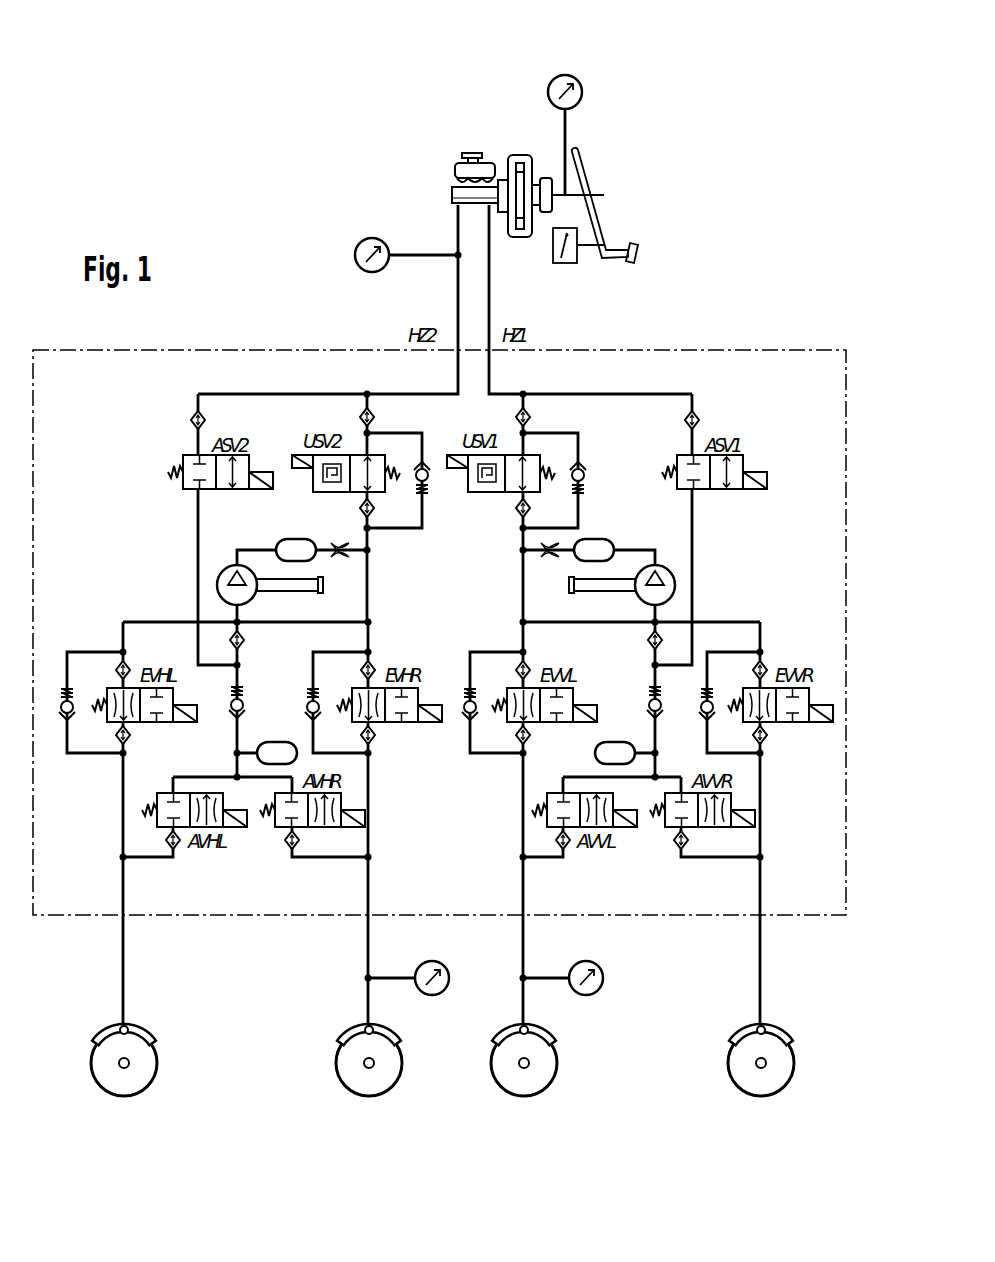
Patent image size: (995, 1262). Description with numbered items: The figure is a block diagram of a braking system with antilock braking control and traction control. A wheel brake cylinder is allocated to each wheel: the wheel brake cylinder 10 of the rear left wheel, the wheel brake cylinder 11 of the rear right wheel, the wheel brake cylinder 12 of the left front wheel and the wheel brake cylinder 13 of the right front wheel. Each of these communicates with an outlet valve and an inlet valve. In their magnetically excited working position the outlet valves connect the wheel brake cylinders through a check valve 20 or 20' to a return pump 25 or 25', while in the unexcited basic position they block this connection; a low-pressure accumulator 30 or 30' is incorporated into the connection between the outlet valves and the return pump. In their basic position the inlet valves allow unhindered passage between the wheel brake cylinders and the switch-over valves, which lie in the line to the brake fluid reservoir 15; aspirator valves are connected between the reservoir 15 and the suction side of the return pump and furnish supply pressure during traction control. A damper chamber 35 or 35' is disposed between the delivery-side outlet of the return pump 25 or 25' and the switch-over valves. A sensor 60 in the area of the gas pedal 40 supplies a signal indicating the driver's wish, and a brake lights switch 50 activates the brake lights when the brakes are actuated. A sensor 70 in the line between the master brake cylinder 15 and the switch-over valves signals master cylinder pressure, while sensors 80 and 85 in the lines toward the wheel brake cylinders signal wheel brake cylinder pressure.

The wheel brake cylinder 10 is at (157, 1063).
The wheel brake cylinder 11 is at (336, 1063).
The wheel brake cylinder 12 is at (491, 1063).
The wheel brake cylinder 13 is at (728, 1063).
The brake fluid reservoir 15 is at (455, 166).
The check valve 20 is at (253, 677).
The check valve 20' is at (636, 677).
The return pump 25 is at (266, 561).
The return pump 25' is at (625, 561).
The low-pressure accumulator 30 is at (277, 725).
The low-pressure accumulator 30' is at (615, 725).
The damper chamber 35 is at (296, 528).
The damper chamber 35' is at (599, 528).
The gas pedal 40 is at (607, 211).
The brake lights switch 50 is at (553, 248).
The sensor 60 is at (562, 74).
The sensor 70 is at (371, 238).
The sensor 80 is at (436, 995).
The sensor 85 is at (603, 981).